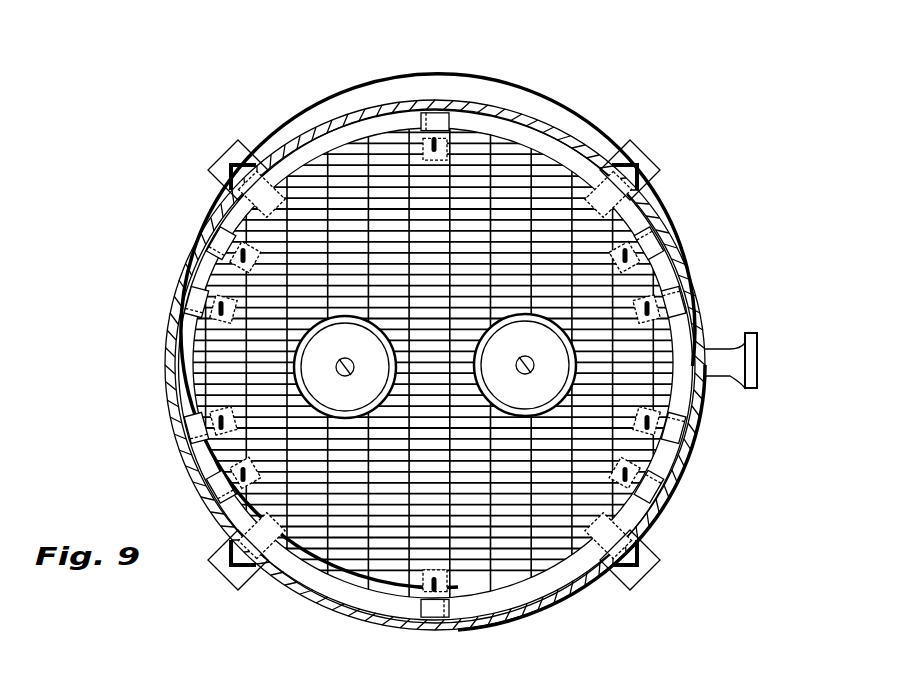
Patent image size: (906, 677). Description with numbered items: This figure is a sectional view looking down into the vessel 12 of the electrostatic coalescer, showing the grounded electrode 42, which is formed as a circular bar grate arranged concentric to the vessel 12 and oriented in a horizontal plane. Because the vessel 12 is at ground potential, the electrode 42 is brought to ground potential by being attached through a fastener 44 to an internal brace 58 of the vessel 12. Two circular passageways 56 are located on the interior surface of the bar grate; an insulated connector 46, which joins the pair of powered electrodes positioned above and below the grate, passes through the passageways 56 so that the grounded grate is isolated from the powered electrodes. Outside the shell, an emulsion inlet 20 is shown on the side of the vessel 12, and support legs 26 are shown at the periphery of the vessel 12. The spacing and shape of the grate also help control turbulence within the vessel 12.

The vessel 12 is at (532, 122).
The emulsion inlet 20 is at (752, 340).
The support leg 26 is at (650, 168).
The electrode 42 is at (350, 165).
The fastener 44 is at (208, 317).
The insulated connector 46 is at (348, 360).
The passageway 56 is at (323, 317).
The brace 58 is at (200, 287).